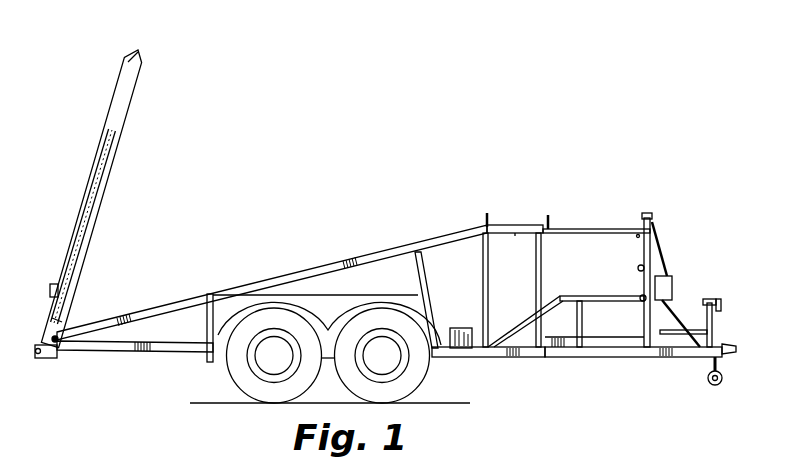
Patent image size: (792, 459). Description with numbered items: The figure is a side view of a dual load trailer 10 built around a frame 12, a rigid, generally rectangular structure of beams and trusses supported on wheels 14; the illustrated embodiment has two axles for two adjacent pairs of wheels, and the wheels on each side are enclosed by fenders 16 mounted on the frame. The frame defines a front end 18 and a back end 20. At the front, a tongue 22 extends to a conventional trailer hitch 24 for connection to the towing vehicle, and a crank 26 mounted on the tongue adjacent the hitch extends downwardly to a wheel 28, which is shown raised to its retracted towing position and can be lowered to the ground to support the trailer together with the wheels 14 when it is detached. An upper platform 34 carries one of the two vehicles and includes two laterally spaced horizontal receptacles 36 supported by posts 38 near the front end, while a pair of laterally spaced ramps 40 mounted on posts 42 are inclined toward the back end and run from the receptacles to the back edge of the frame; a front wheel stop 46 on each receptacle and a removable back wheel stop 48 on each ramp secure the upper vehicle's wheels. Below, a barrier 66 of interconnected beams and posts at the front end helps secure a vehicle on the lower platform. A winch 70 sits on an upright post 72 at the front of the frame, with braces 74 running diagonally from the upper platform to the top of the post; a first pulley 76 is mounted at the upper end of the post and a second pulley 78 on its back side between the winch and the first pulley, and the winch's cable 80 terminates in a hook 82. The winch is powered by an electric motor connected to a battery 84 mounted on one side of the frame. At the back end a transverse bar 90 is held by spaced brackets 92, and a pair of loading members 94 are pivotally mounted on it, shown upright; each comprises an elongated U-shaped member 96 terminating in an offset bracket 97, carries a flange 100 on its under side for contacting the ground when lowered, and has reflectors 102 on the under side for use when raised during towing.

The dual load trailer 10 is at (384, 220).
The frame 12 is at (503, 358).
The wheels 14 is at (240, 375).
The fenders 16 is at (318, 298).
The front end 18 is at (632, 364).
The back end 20 is at (69, 366).
The tongue 22 is at (686, 358).
The trailer hitch 24 is at (730, 347).
The crank 26 is at (716, 298).
The wheel 28 is at (724, 378).
The upper platform 34 is at (498, 218).
The horizontal receptacles 36 is at (523, 226).
The posts 38 is at (536, 246).
The ramps 40 is at (222, 298).
The posts 42 is at (212, 322).
The front wheel stop 46 is at (550, 229).
The back wheel stop 48 is at (483, 222).
The barrier 66 is at (592, 297).
The winch 70 is at (672, 286).
The upright post 72 is at (657, 233).
The braces 74 is at (601, 230).
The first pulley 76 is at (650, 216).
The second pulley 78 is at (637, 269).
The cable 80 is at (663, 248).
The hook 82 is at (634, 238).
The battery 84 is at (461, 328).
The transverse bar 90 is at (37, 348).
The brackets 92 is at (56, 359).
The loading members 94 is at (120, 183).
The U-shaped member 96 is at (70, 290).
The offset bracket 97 is at (58, 322).
The flange 100 is at (122, 70).
The reflectors 102 is at (51, 289).